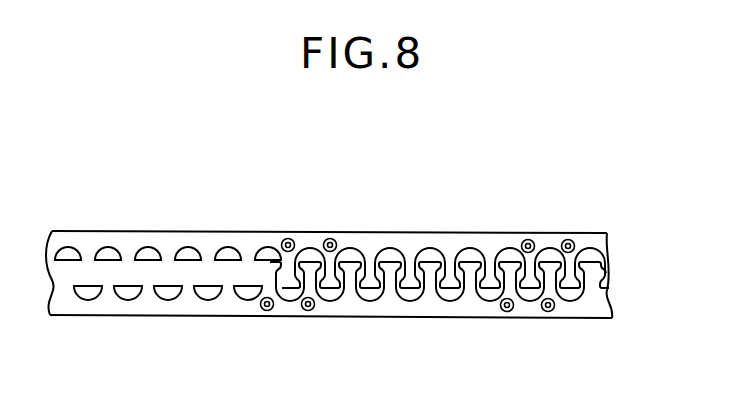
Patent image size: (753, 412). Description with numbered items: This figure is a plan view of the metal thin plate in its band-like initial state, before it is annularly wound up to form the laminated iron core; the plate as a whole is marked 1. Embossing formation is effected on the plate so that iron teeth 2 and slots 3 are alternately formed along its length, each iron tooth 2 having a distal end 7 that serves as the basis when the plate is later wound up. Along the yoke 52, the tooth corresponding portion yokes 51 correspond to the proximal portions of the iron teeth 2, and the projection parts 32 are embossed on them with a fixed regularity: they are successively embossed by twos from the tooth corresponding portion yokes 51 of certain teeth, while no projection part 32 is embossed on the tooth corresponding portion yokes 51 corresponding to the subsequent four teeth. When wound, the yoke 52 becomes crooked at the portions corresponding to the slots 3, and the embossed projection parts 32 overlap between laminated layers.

The metal strip (plate) 1 is at (203, 229).
The iron core tooth 2 is at (445, 273).
The slot 3 is at (402, 279).
The distal end of iron core tooth 7 is at (483, 293).
The projection part 32 is at (340, 227).
The tooth corresponding portion yoke 51 is at (450, 247).
The yoke 52 is at (390, 246).